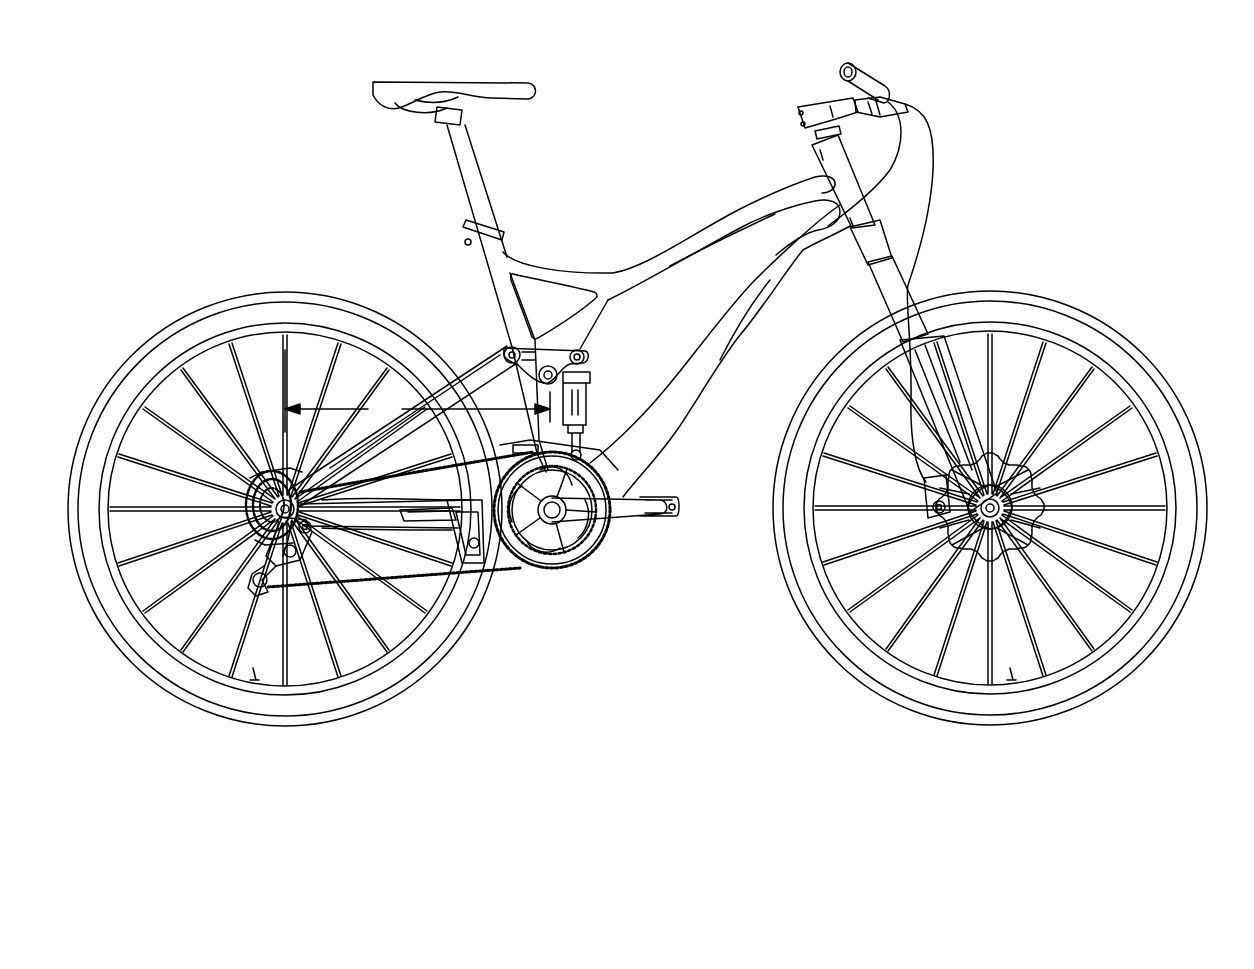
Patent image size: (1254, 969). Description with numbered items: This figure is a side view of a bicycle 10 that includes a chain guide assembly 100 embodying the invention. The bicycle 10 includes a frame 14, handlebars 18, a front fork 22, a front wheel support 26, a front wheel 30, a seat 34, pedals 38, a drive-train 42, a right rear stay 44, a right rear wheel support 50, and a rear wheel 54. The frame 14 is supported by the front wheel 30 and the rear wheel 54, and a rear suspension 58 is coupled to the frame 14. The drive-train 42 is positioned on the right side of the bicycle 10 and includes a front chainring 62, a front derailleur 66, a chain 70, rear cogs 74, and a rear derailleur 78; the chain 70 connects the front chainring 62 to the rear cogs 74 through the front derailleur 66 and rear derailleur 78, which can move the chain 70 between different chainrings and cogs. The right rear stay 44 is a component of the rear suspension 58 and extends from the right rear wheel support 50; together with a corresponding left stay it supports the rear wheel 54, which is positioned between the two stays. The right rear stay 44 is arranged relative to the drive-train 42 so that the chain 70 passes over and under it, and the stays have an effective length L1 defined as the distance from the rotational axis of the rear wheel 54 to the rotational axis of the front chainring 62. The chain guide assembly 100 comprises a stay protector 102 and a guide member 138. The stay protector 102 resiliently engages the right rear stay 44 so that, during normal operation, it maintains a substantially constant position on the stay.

The bicycle 10 is at (1071, 147).
The frame 14 is at (713, 215).
The handlebars 18 is at (883, 82).
The front fork 22 is at (933, 383).
The front wheel support 26 is at (947, 465).
The front wheel 30 is at (1124, 630).
The seat 34 is at (437, 92).
The pedals 38 is at (672, 513).
The drive-train 42 is at (577, 633).
The right rear stay 44 is at (487, 556).
The right rear wheel support 50 is at (350, 580).
The rear wheel 54 is at (306, 333).
The rear suspension 58 is at (620, 416).
The front chainring 62 is at (593, 483).
The front derailleur 66 is at (560, 430).
The chain 70 is at (520, 570).
The rear cogs 74 is at (250, 455).
The rear derailleur 78 is at (257, 573).
The chain guide assembly 100 is at (469, 654).
The stay protector 102 is at (422, 532).
The guide member 138 is at (477, 568).
The effective length L1 is at (417, 391).